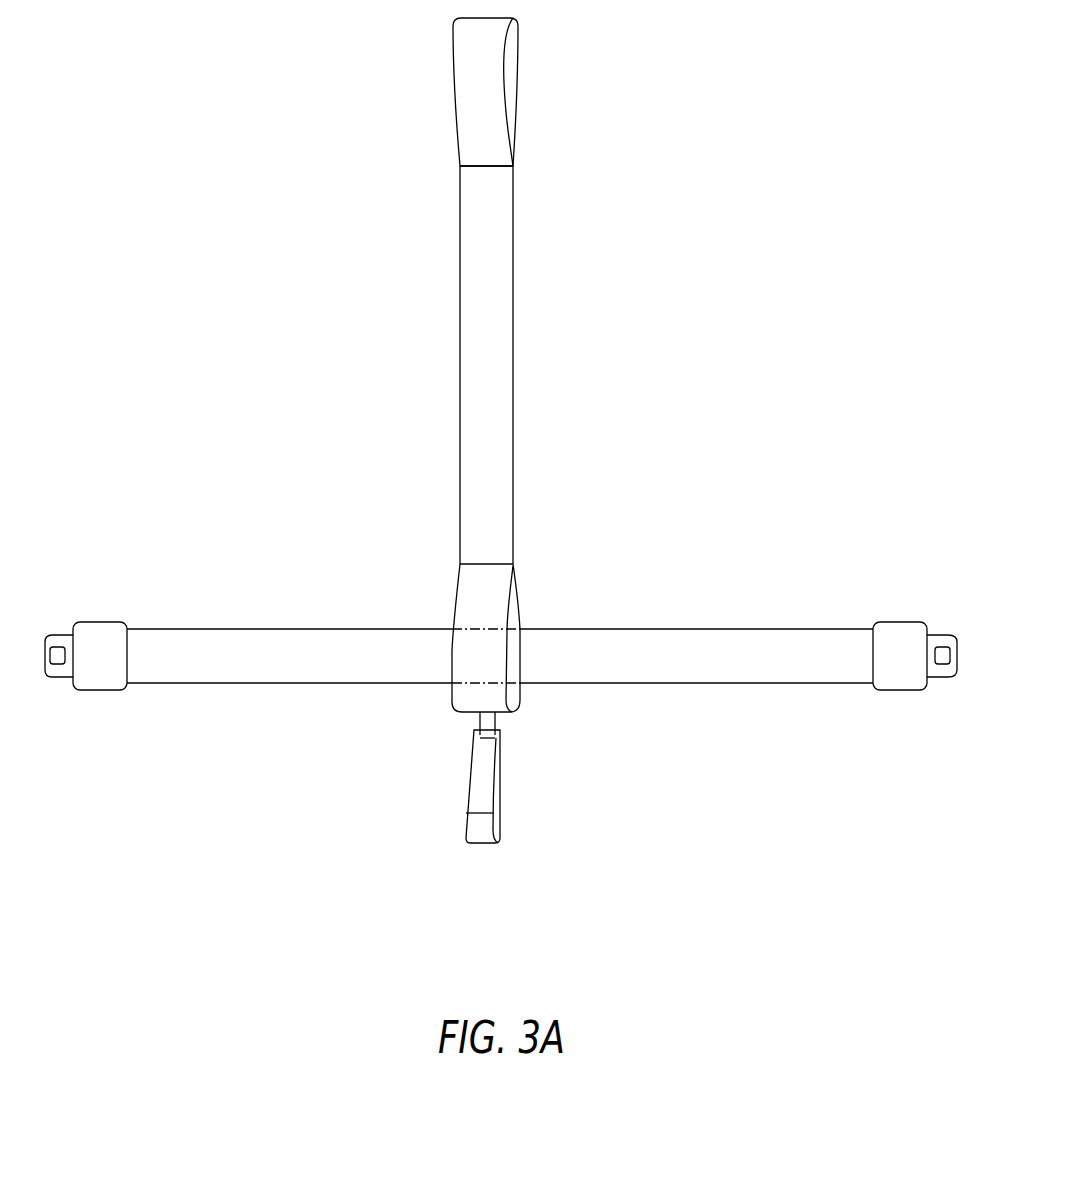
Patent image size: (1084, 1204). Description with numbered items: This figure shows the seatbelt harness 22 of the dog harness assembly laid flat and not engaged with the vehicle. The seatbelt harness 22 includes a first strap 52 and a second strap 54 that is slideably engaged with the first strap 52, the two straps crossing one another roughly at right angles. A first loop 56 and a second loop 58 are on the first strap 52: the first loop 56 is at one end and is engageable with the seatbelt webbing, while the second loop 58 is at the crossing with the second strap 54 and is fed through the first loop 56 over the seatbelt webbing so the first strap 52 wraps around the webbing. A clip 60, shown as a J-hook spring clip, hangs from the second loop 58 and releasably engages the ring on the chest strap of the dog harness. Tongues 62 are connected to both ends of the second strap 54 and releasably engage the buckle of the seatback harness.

The seatbelt harness 22 is at (750, 237).
The first strap 52 is at (460, 334).
The second strap 54 is at (292, 628).
The first loop 56 is at (519, 87).
The second loop 58 is at (519, 600).
The clip 60 is at (500, 812).
The tongues 62 is at (58, 636).